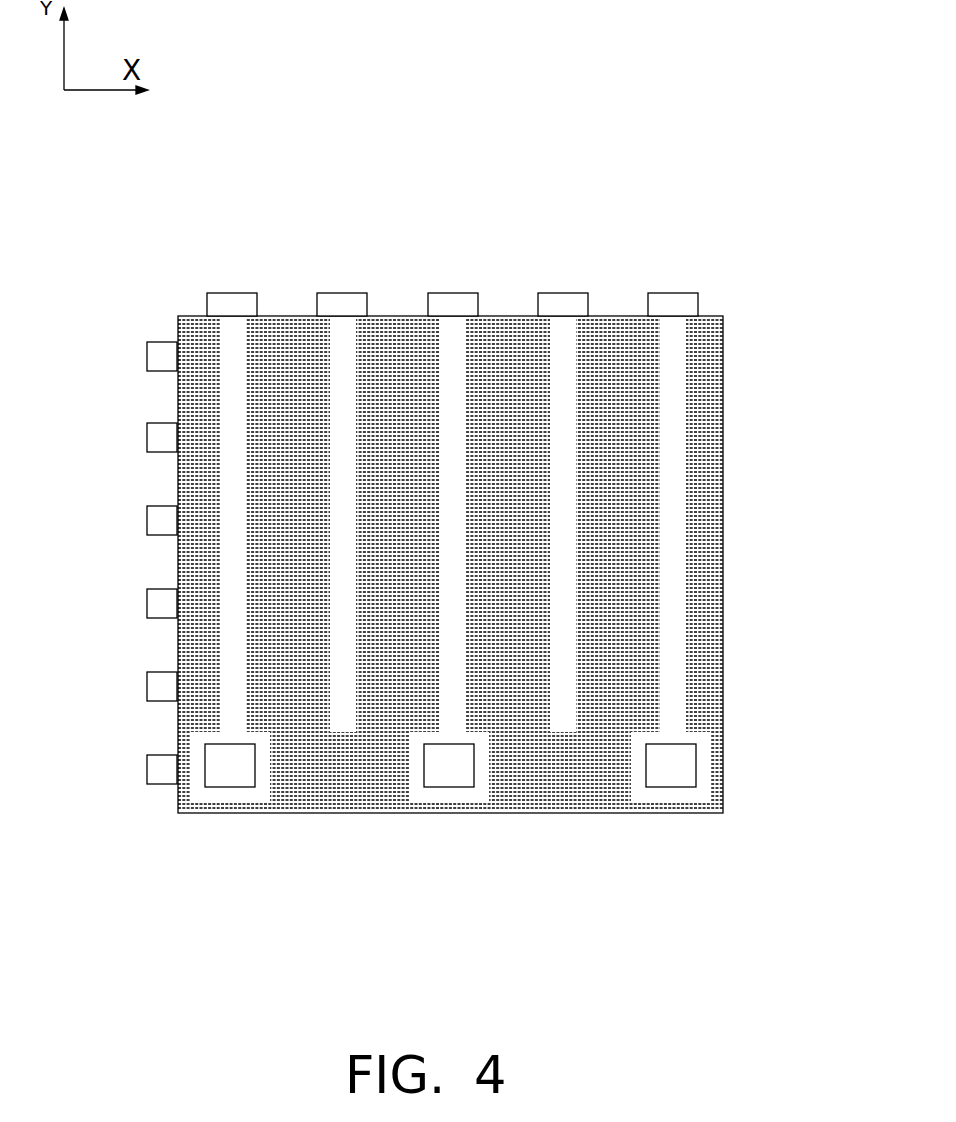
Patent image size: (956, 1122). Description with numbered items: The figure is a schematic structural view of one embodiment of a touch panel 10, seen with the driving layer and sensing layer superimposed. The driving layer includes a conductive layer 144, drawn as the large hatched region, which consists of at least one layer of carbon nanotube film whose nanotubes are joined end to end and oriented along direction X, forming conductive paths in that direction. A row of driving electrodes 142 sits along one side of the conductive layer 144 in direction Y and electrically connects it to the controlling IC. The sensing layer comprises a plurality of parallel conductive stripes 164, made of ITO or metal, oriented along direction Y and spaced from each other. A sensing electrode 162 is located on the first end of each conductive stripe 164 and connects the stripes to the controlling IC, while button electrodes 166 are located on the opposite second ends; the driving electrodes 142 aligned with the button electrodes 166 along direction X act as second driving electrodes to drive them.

The touch panel 10 is at (475, 128).
The driving electrodes 142 is at (155, 518).
The conductive layer 144 is at (193, 395).
The sensing electrodes 162 is at (455, 303).
The conductive stripes 164 is at (673, 443).
The button electrodes 166 is at (695, 767).